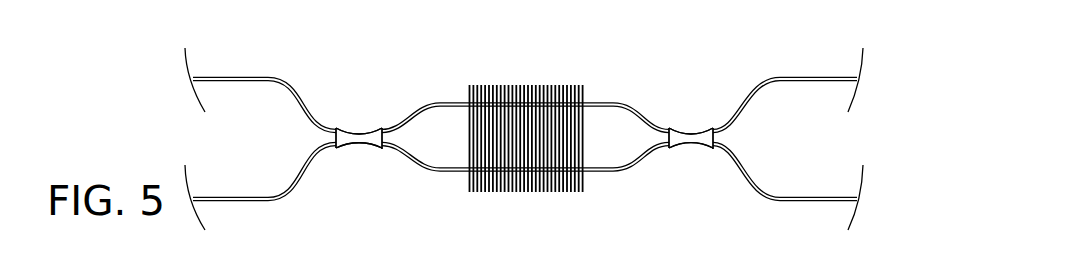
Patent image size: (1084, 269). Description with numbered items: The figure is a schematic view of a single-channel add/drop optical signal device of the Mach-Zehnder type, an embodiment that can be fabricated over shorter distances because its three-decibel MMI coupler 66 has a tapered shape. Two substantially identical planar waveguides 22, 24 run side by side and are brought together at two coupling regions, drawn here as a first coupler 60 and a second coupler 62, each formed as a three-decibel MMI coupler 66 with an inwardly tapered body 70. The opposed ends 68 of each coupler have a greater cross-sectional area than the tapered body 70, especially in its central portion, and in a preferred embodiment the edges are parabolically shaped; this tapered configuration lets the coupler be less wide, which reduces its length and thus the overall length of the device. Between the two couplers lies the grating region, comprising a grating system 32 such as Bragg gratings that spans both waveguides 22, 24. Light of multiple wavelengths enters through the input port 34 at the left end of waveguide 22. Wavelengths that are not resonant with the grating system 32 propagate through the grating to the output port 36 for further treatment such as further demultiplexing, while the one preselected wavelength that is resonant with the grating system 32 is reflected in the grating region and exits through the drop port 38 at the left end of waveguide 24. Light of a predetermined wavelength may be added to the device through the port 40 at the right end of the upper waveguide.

The planar waveguide 22 is at (290, 78).
The planar waveguide 24 is at (288, 201).
The grating system 32 is at (528, 78).
The input port 34 is at (194, 77).
The output port 36 is at (856, 197).
The drop port 38 is at (194, 197).
The port 40 is at (856, 77).
The first directional coupler 60 is at (358, 103).
The second directional coupler 62 is at (693, 92).
The 3-dB MMI coupler 66 is at (366, 142).
The coupler end faces 68 is at (379, 129).
The inwardly tapered body 70 is at (347, 130).